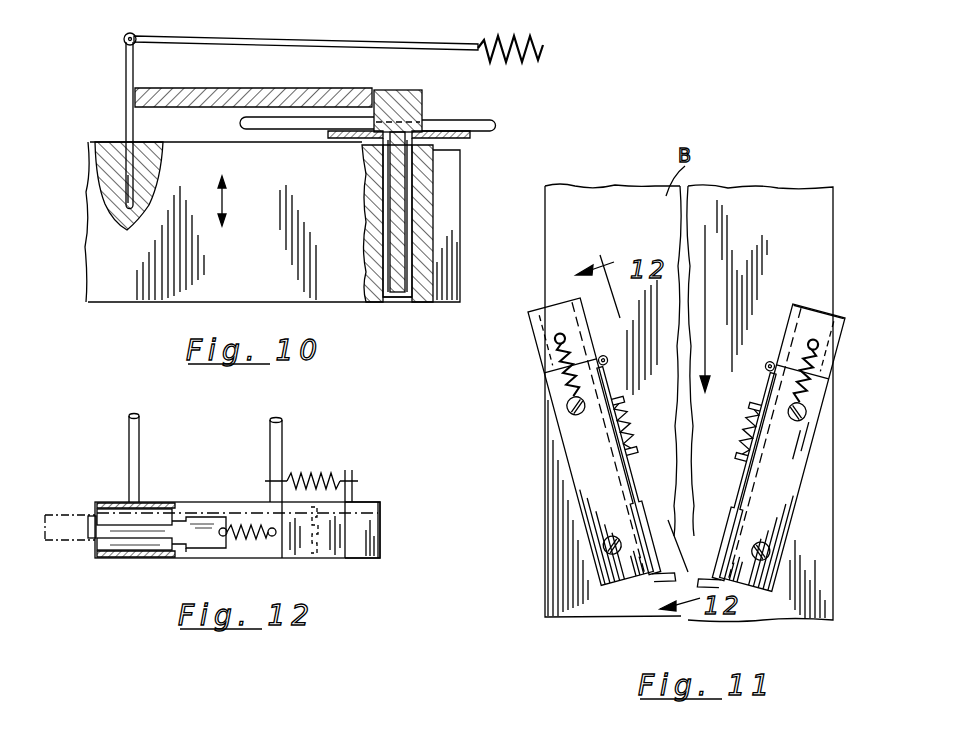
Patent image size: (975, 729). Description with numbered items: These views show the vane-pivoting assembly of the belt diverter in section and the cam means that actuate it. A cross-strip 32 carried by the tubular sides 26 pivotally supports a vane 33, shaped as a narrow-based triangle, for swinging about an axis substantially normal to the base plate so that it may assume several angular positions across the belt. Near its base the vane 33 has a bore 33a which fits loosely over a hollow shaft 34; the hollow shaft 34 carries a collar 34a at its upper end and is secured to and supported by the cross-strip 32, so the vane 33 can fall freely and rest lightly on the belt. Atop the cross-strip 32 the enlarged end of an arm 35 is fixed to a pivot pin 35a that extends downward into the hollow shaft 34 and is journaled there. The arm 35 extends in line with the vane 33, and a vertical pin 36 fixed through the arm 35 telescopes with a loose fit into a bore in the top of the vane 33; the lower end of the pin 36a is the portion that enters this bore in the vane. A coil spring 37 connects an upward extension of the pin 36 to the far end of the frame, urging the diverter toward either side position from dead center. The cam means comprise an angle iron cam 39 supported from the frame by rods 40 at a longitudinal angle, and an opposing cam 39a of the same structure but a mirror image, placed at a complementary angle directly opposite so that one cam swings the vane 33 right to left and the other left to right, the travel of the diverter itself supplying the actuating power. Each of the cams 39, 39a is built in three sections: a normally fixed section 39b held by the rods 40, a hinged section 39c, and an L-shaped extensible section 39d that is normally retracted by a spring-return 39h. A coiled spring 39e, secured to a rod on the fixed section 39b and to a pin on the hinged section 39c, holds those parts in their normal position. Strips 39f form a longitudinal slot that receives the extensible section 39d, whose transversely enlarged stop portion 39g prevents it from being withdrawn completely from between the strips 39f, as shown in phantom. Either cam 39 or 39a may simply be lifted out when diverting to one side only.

In FIG. 10, the tubular sides 26 is at (478, 121).
In FIG. 10, the cross-strip 32 is at (470, 136).
In FIG. 10, the vane 33 is at (446, 211).
In FIG. 10, the bore 33a is at (400, 305).
In FIG. 10, the hollow shaft 34 is at (386, 214).
In FIG. 10, the collar 34a is at (364, 141).
In FIG. 10, the arm 35 is at (283, 88).
In FIG. 10, the pivot pin 35a is at (398, 168).
In FIG. 10, the vertical pin 36 is at (125, 60).
In FIG. 10, the lower end of lever 36a is at (126, 148).
In FIG. 10, the coil spring 37 is at (305, 40).
In FIG. 12, the angle iron cam 39 is at (120, 501).
In FIG. 11, the angle iron cam 39 is at (568, 437).
In FIG. 11, the opposing cam 39a is at (783, 484).
In FIG. 11, the fixed section 39b is at (772, 520).
In FIG. 12, the hinged section 39c is at (380, 546).
In FIG. 11, the hinged section 39c is at (804, 326).
In FIG. 12, the extensible section 39d is at (198, 520).
In FIG. 11, the extensible section 39d is at (630, 490).
In FIG. 12, the coiled spring 39e is at (328, 478).
In FIG. 11, the coiled spring 39e is at (782, 378).
In FIG. 12, the strips 39f is at (152, 505).
In FIG. 11, the strips 39f is at (722, 528).
In FIG. 12, the stop portion 39g is at (218, 552).
In FIG. 12, the spring-return 39h is at (260, 538).
In FIG. 11, the spring-return 39h is at (626, 430).
In FIG. 12, the rods 40 is at (283, 452).
In FIG. 11, the rods 40 is at (566, 408).